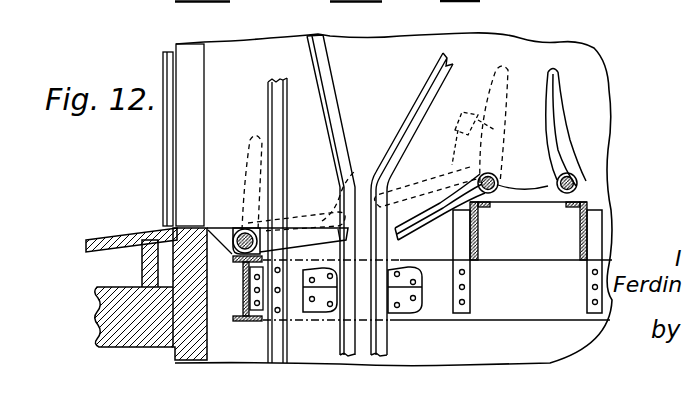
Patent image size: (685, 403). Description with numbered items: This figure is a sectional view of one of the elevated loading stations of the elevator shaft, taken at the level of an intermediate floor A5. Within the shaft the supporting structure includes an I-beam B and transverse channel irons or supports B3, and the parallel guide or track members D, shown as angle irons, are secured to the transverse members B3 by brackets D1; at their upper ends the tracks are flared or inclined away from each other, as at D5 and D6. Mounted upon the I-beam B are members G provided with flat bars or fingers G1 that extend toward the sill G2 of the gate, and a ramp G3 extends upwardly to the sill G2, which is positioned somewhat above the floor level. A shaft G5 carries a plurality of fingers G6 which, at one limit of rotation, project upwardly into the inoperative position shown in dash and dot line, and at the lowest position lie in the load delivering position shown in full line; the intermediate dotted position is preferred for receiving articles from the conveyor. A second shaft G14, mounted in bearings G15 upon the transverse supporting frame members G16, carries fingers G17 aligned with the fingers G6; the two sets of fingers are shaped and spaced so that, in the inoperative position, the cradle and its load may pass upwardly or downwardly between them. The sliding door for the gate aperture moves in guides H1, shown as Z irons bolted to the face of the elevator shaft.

The guide H1 is at (165, 150).
The sill G2 is at (187, 226).
The ramp G3 is at (103, 234).
The member G is at (233, 253).
The intermediate floor A5 is at (98, 316).
The flat bar G1 is at (215, 228).
The shaft G5 is at (250, 230).
The finger G6 is at (250, 156).
The I-beam B is at (245, 320).
The track member D is at (340, 247).
The bracket D1 is at (318, 306).
The flared upper end of track D5 is at (330, 66).
The flared upper end of track D6 is at (434, 84).
The shaft G14 is at (490, 172).
The finger G17 is at (420, 223).
The bearing G15 is at (520, 204).
The transverse supporting frame member G16 is at (476, 240).
The transverse channel iron B3 is at (516, 316).